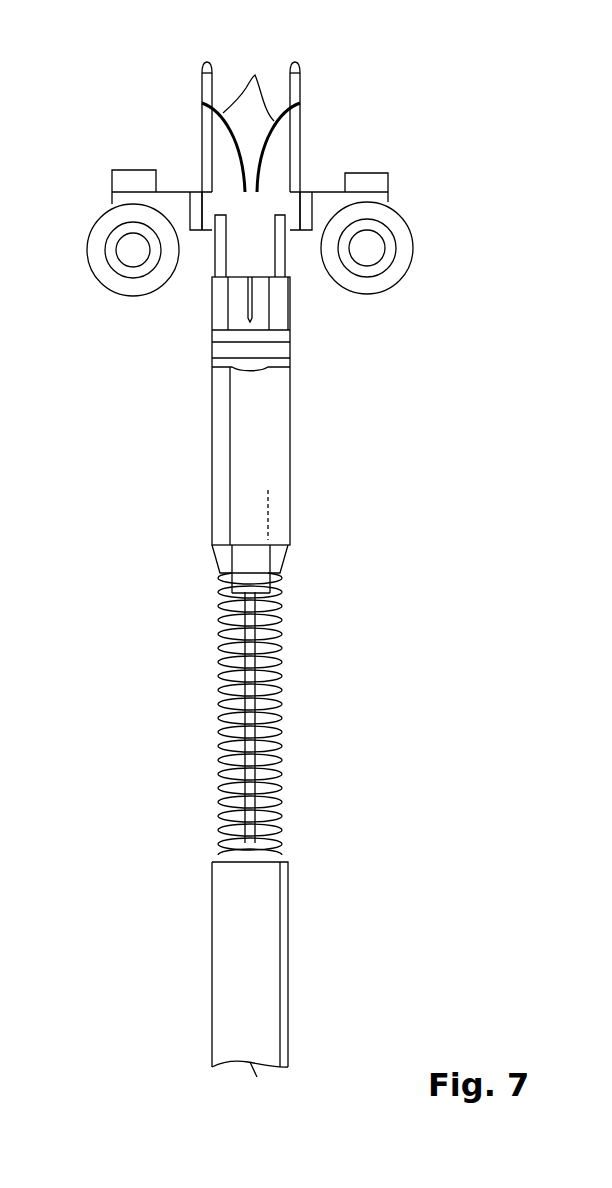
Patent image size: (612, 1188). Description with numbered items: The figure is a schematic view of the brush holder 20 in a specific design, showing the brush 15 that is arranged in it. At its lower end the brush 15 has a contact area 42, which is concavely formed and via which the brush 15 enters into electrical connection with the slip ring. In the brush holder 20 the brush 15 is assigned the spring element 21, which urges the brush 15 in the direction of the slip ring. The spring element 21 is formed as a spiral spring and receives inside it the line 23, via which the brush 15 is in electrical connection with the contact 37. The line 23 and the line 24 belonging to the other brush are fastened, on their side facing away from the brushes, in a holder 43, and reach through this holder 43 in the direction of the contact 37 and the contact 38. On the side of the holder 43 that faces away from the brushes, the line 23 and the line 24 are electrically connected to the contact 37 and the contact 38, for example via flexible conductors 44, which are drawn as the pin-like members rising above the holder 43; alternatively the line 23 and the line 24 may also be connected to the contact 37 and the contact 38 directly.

The brush holder 20 is at (408, 139).
The flexible conductors 44 is at (251, 140).
The contact 38 is at (102, 228).
The contact 37 is at (400, 232).
The line 24 is at (223, 260).
The line 23 is at (280, 258).
The holder 43 is at (279, 446).
The spring element 21 is at (282, 732).
The brush 15 is at (255, 953).
The contact area 42 is at (250, 1062).